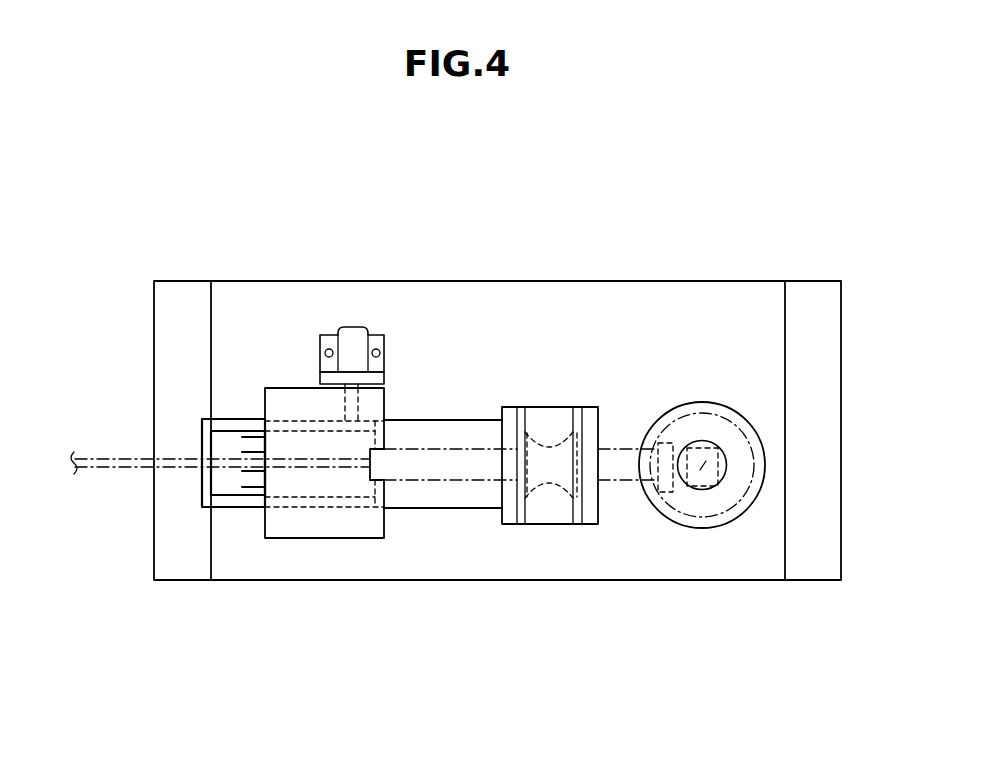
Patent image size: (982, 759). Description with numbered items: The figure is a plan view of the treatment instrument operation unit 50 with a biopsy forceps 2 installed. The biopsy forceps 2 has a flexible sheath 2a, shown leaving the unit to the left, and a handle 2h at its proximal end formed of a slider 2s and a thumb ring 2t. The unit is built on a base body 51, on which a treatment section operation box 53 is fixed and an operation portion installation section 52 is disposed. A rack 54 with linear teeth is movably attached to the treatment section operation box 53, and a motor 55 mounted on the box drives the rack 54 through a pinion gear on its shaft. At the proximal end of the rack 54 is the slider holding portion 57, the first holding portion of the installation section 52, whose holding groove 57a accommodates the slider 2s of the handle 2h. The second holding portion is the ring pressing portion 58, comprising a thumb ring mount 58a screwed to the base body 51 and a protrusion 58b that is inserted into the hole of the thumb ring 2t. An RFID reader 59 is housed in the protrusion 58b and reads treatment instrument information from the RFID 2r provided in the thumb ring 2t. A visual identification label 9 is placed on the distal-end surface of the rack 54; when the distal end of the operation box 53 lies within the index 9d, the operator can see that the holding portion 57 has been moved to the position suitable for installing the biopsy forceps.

The treatment instrument operation unit 50 is at (434, 213).
The base body 51 is at (185, 281).
The biopsy forceps 2 is at (432, 484).
The sheath 2a is at (115, 467).
The visual identification label 9 is at (237, 437).
The index 9d is at (264, 488).
The treatment section operation box 53 is at (285, 398).
The motor 55 is at (352, 337).
The rack 54 is at (438, 412).
The operation portion installation section 52 is at (585, 188).
The slider holding portion 57 is at (563, 407).
The holding groove 57a is at (541, 428).
The slider 2s is at (549, 485).
The handle 2h is at (582, 650).
The ring pressing portion 58 is at (618, 230).
The thumb ring mount 58a is at (668, 442).
The thumb ring hole insertion protrusion 58b is at (703, 440).
The RFID reader 59 is at (720, 440).
The thumb ring 2t is at (697, 507).
The RFID 2r is at (663, 490).